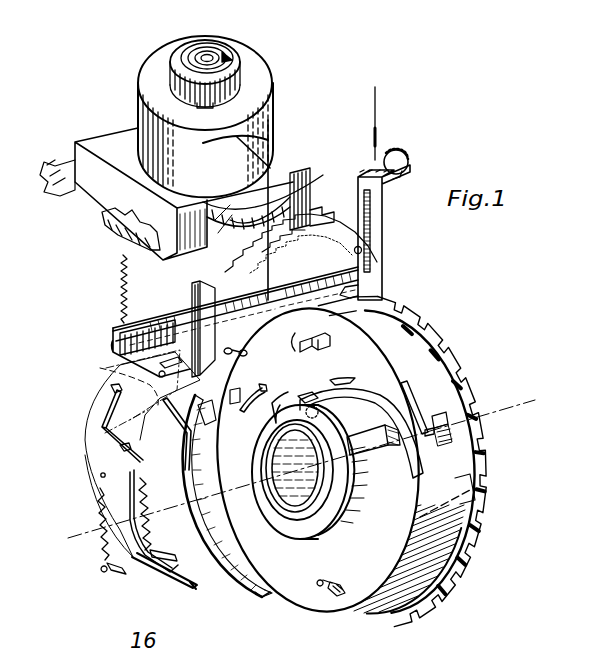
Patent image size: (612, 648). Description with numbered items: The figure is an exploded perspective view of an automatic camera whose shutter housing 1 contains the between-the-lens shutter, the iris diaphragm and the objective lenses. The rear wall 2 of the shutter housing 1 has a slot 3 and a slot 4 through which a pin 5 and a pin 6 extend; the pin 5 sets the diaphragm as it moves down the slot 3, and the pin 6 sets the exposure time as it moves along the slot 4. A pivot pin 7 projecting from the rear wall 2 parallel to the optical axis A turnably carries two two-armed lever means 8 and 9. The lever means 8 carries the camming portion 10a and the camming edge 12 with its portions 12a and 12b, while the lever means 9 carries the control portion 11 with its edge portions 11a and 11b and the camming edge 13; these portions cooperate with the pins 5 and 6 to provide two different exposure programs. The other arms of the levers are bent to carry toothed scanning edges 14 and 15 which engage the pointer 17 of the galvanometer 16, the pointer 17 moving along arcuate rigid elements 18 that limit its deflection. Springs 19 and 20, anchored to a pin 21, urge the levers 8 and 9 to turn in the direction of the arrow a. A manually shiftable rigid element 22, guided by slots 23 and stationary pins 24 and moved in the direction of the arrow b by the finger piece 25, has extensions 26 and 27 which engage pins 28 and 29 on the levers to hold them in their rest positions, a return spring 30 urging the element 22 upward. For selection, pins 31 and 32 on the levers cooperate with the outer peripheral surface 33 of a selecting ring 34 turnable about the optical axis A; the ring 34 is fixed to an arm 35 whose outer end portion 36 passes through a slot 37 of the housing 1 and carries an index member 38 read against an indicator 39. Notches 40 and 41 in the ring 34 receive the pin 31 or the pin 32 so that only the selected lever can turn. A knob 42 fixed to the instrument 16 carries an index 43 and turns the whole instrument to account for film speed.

The shutter housing 1 is at (407, 348).
The rear wall 2 is at (400, 543).
The slot 3 is at (272, 410).
The slot 4 is at (342, 586).
The pin 5 is at (250, 397).
The pin 6 is at (319, 580).
The pivot pin 7 is at (325, 338).
The lever means 8 is at (235, 306).
The lever means 9 is at (198, 296).
The camming portion 10a is at (147, 383).
The control portion 11 is at (133, 422).
The edge portion 11a is at (120, 446).
The edge portion 11b is at (110, 397).
The camming edge 12 is at (256, 600).
The camming portion 12a is at (266, 598).
The camming edge portion 12b is at (252, 595).
The camming edge 13 is at (177, 588).
The toothed scanning edge 14 is at (310, 242).
The toothed scanning edge 15 is at (268, 246).
The electrical meter 16 is at (148, 82).
The pointer 17 is at (270, 175).
The arcuate rigid elements 18 is at (230, 207).
The spring 19 is at (142, 500).
The spring 20 is at (100, 503).
The pin 21 is at (133, 565).
The manually shiftable rigid element 22 is at (368, 285).
The elongated slots 23 is at (372, 214).
The pins 24 is at (362, 250).
The free end portion 25 is at (408, 160).
The rigid extension 26 is at (182, 332).
The rigid extension 27 is at (120, 340).
The pin 28 is at (247, 350).
The pin 29 is at (127, 324).
The return spring 30 is at (120, 274).
The pin 31 is at (234, 404).
The pin 32 is at (203, 412).
The outer peripheral surface 33 is at (303, 397).
The selecting ring 34 is at (288, 518).
The arm 35 is at (372, 450).
The outer end portion 36 is at (440, 418).
The slot 37 is at (421, 388).
The index member 38 is at (452, 436).
The indicator 39 is at (462, 489).
The notch 40 is at (343, 407).
The notch 41 is at (265, 455).
The knob 42 is at (178, 63).
The index 43 is at (228, 55).
The arrow a is at (301, 349).
The arrow b is at (377, 113).
The optical axis A is at (304, 465).